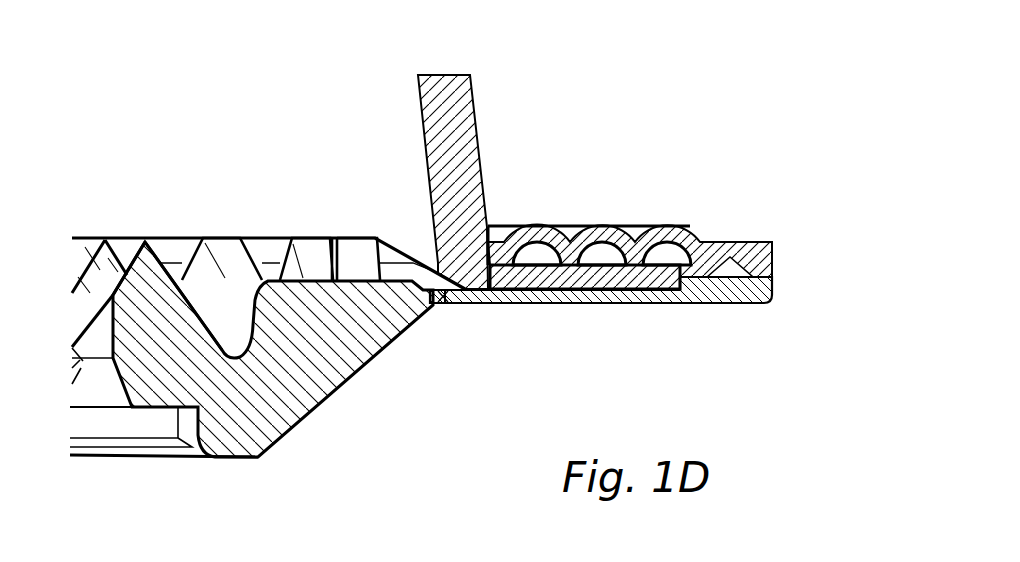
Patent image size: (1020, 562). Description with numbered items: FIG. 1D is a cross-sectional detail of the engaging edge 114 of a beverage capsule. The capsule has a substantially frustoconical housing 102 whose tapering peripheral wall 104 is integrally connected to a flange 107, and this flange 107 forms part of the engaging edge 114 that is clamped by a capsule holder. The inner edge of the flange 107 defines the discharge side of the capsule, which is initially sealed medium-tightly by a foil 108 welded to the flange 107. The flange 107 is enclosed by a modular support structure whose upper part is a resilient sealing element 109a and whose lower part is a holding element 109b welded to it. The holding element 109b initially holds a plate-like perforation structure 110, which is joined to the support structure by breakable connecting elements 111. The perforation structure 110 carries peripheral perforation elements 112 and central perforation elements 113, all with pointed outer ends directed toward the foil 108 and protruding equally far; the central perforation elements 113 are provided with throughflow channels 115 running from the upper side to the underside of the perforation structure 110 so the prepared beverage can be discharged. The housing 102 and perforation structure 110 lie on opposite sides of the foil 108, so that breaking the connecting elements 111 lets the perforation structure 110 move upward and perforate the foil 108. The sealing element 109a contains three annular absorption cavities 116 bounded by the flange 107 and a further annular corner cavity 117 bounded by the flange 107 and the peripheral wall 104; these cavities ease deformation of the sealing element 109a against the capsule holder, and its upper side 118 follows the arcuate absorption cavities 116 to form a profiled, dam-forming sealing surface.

The housing 102 is at (487, 61).
The peripheral wall 104 is at (460, 120).
The flange 107 is at (600, 290).
The foil 108 is at (405, 232).
The sealing element 109a is at (748, 250).
The holding element 109b is at (723, 292).
The perforation structure 110 is at (328, 375).
The breakable connecting elements 111 is at (443, 303).
The peripheral perforation elements 112 is at (227, 250).
The central perforation elements 113 is at (113, 238).
The engaging edge 114 is at (785, 240).
The throughflow channels 115 is at (100, 346).
The annular absorption cavities 116 is at (537, 250).
The annular corner cavity 117 is at (493, 290).
The upper side of sealing element 118 is at (581, 213).